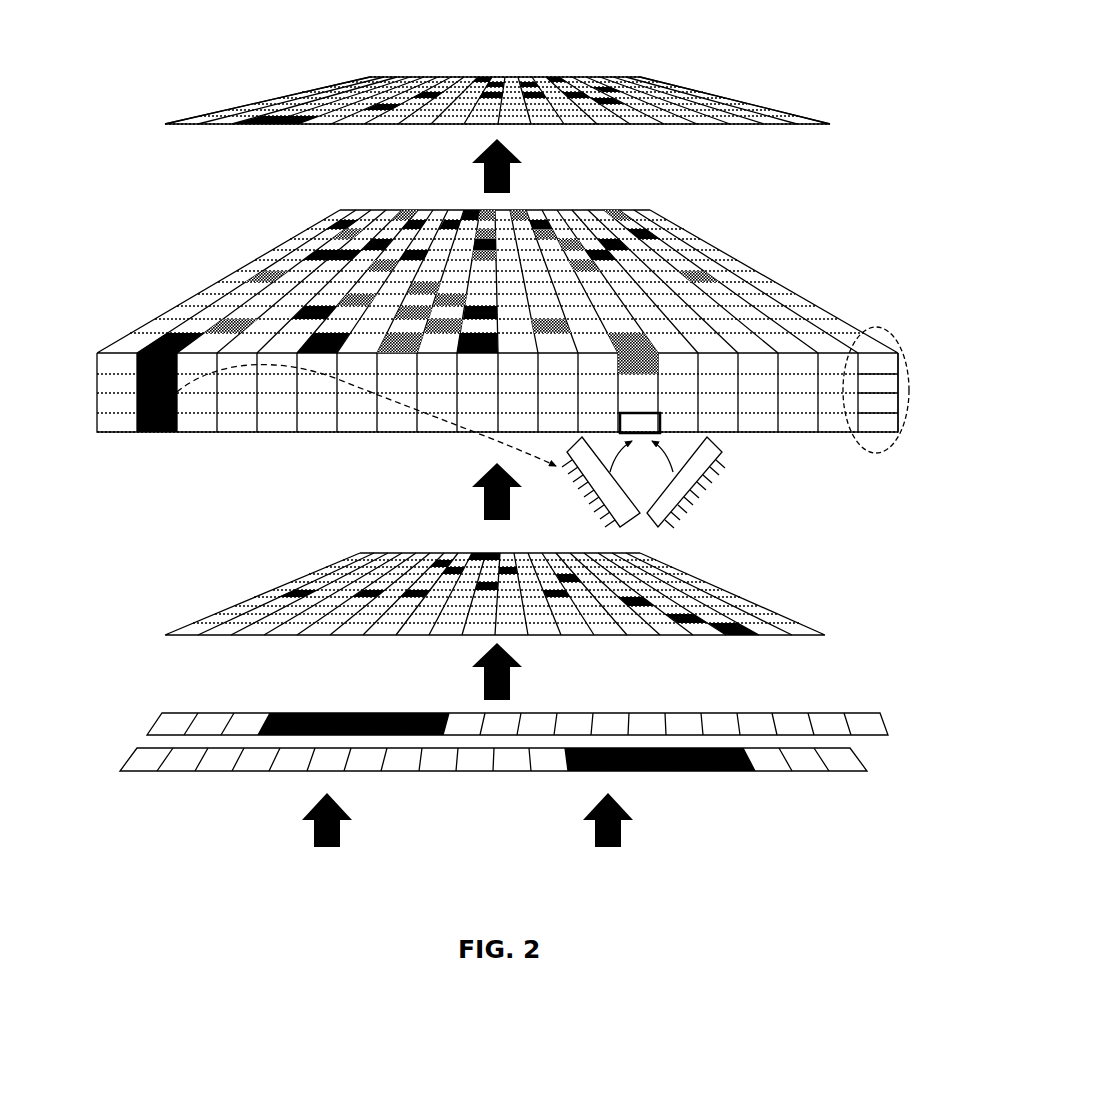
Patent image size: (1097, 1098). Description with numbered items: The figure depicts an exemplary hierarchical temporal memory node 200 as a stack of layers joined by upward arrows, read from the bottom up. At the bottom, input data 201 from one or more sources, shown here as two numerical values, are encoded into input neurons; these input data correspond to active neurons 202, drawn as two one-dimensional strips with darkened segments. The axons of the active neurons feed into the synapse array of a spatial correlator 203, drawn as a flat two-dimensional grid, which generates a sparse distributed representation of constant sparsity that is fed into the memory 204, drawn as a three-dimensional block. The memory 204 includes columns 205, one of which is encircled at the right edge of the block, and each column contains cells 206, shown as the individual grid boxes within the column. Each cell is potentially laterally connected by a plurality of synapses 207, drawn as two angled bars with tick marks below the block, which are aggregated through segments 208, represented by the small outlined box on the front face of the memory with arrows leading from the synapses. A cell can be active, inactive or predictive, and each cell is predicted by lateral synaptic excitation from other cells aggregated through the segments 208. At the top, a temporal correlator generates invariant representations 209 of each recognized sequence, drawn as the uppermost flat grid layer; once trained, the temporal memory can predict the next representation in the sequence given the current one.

The hierarchical temporal memory node 200 is at (521, 20).
The input data 201 is at (356, 838).
The active neurons 202 is at (128, 732).
The spatial correlator 203 is at (190, 607).
The memory 204 is at (186, 299).
The columns 205 is at (880, 326).
The cells 206 is at (884, 385).
The synapses 207 is at (687, 518).
The segments 208 is at (726, 440).
The invariant representations (SDR) 209 is at (190, 105).